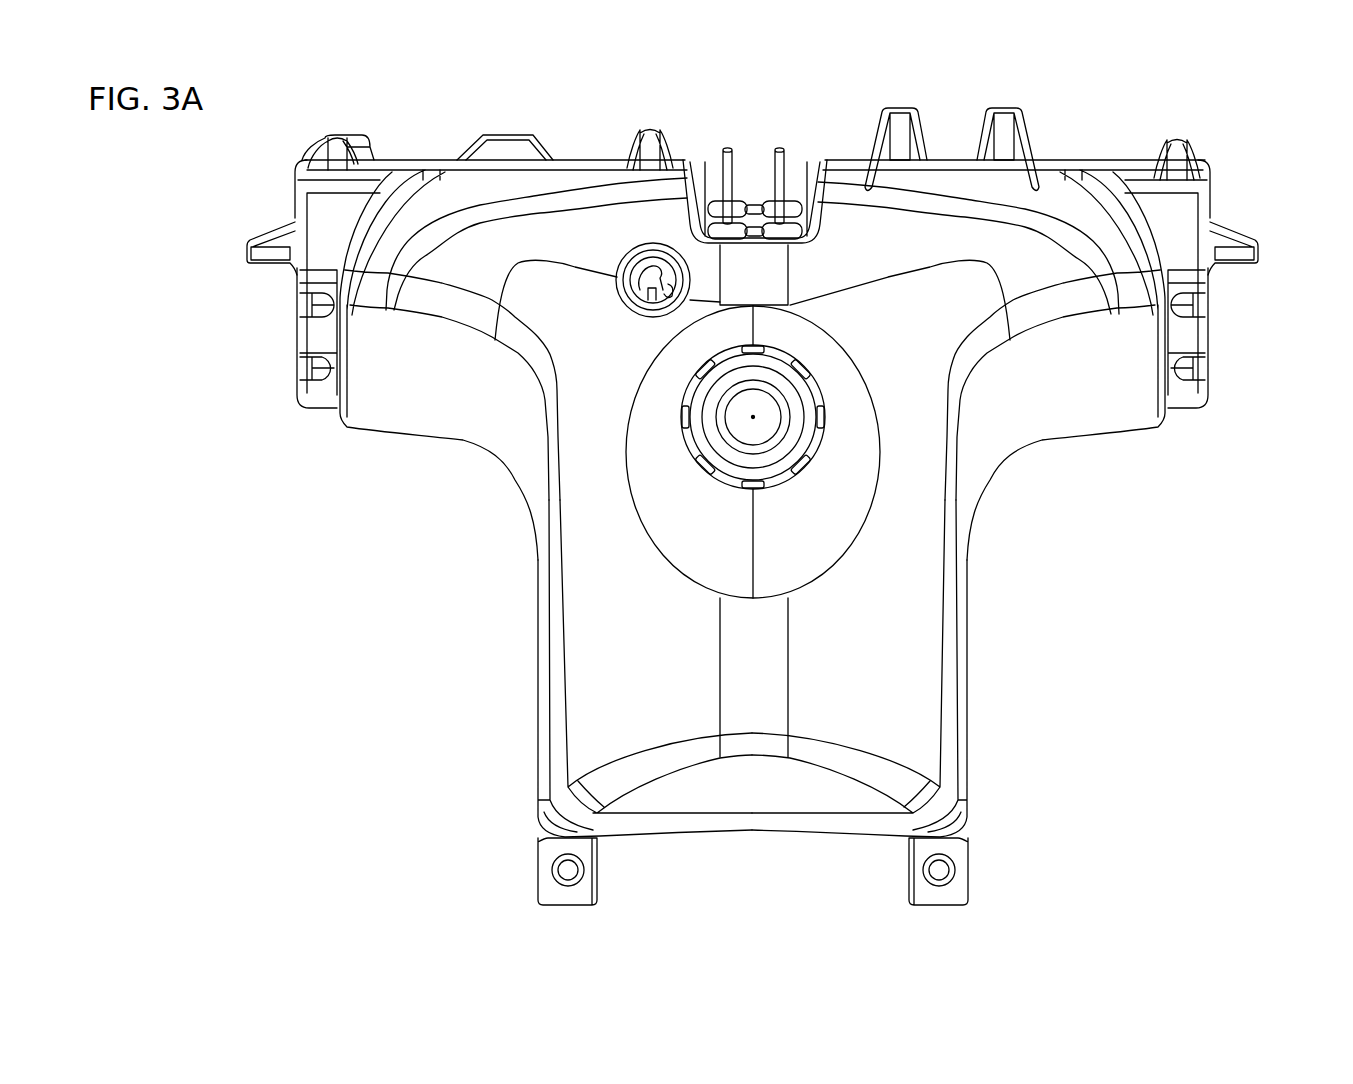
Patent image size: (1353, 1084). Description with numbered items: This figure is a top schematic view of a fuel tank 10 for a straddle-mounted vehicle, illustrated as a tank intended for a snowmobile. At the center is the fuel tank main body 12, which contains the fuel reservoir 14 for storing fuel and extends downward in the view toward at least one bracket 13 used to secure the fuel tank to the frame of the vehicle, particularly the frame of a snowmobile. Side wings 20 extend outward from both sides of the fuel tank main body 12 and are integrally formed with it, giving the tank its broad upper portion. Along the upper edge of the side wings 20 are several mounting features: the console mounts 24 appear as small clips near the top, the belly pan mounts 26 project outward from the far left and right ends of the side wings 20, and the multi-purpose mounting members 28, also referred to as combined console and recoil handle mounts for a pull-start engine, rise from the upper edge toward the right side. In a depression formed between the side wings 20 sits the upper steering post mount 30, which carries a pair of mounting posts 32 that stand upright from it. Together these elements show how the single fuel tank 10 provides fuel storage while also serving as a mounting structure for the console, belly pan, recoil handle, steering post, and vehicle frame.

The fuel tank 10 is at (1199, 619).
The fuel tank main body 12 is at (535, 635).
The bracket 13 is at (560, 902).
The fuel reservoir 14 is at (977, 587).
The side wings 20 is at (413, 437).
The console mount 24 is at (332, 134).
The belly pan mount 26 is at (247, 247).
The multi-purpose mounting member 28 is at (910, 106).
The upper steering post mount 30 is at (757, 155).
The mounting posts 32 is at (725, 146).